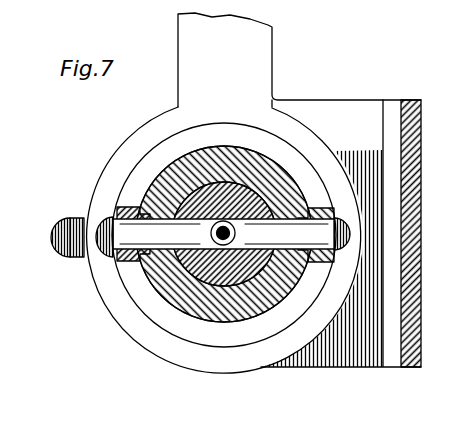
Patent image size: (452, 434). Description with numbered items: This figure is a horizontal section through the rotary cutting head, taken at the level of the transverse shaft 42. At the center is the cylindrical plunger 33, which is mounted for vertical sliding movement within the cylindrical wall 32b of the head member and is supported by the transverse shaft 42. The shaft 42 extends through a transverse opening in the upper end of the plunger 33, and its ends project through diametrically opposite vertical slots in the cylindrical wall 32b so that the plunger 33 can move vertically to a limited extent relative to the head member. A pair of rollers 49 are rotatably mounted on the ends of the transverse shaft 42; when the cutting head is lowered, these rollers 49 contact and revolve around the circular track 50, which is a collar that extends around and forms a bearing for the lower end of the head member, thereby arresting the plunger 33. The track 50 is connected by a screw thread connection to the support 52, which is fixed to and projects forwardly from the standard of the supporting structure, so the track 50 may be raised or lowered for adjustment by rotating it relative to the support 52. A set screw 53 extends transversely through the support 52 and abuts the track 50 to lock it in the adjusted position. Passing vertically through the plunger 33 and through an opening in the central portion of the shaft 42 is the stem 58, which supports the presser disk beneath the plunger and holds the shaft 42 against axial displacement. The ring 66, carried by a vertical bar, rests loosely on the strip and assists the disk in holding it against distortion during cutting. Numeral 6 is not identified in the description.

The wall 6 is at (423, 133).
The cylindrical plunger 33 is at (261, 226).
The transverse shaft 42 is at (273, 194).
The rollers 49 is at (118, 279).
The circular track 50 is at (168, 319).
The support 52 is at (122, 323).
The set screw 53 is at (66, 254).
The stem 58 is at (231, 241).
The ring 66 is at (348, 358).
The cylindrical wall 32b is at (210, 336).